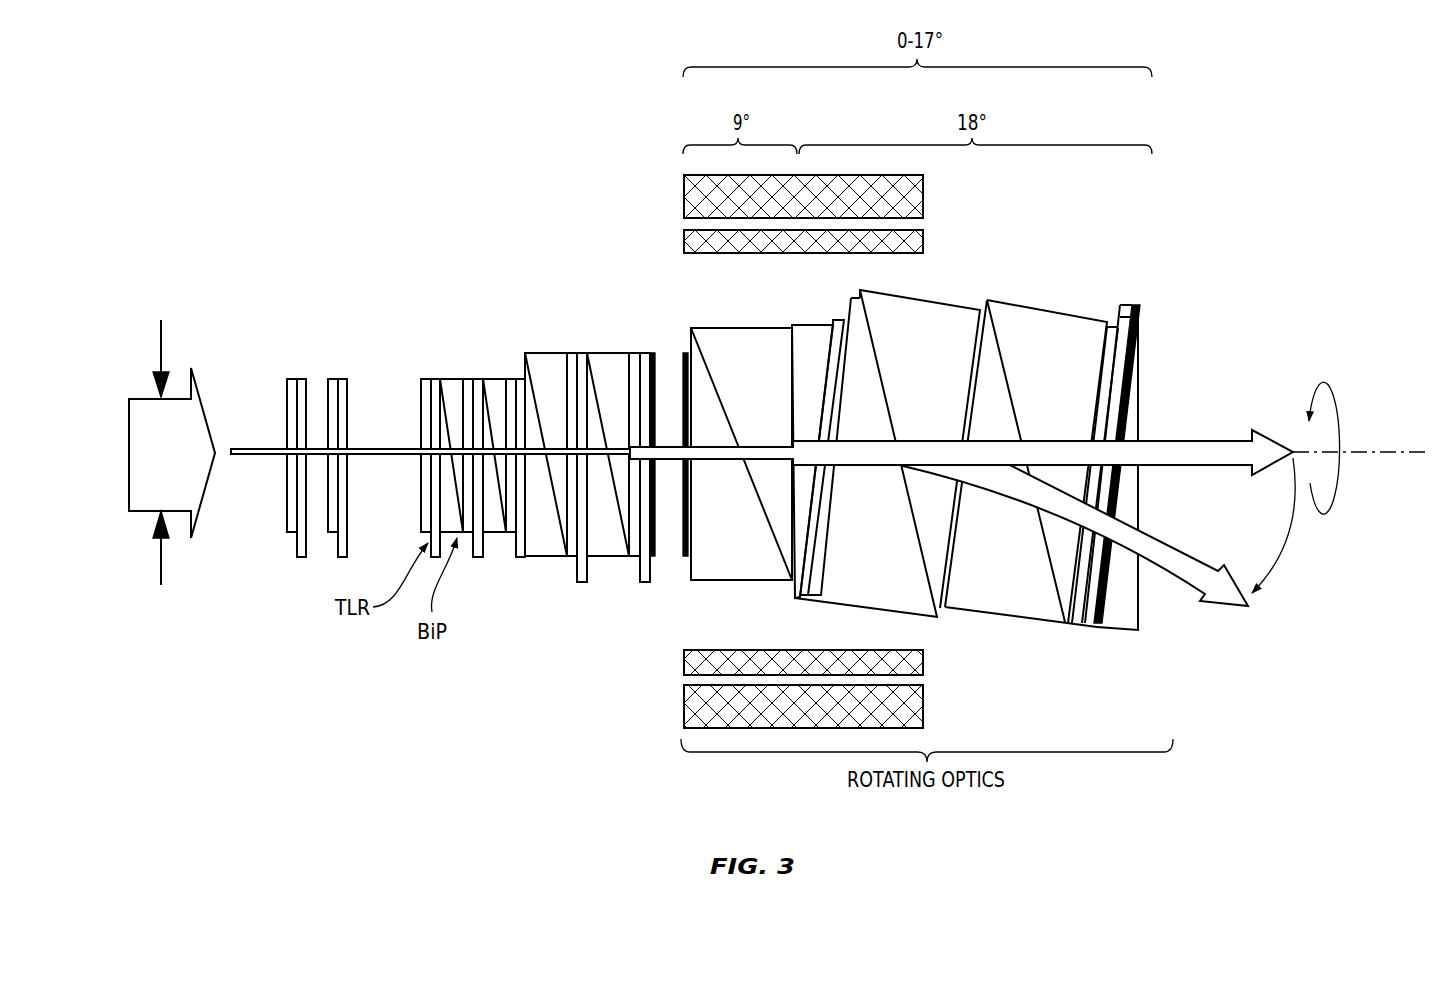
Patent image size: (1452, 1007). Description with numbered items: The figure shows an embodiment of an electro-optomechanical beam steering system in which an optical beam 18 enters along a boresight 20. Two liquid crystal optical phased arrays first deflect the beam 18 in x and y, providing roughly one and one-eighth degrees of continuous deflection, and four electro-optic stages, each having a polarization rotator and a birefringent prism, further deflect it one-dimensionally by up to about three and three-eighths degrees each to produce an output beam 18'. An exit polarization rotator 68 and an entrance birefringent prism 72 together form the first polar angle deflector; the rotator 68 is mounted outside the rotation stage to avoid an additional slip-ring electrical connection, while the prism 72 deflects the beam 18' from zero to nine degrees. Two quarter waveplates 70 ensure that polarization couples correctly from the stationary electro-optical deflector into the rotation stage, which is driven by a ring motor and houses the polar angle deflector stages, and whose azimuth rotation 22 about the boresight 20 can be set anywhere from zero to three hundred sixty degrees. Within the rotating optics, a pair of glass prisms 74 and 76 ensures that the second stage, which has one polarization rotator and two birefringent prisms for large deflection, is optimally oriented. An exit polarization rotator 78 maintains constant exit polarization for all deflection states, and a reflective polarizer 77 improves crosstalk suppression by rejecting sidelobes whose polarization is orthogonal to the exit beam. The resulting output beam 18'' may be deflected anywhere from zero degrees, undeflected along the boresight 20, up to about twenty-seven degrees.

The optical beam 18 is at (157, 452).
The output beam 18' is at (762, 476).
The output beam 18'' is at (1075, 563).
The boresight 20 is at (1392, 452).
The rotation direction 22 is at (1340, 428).
The exit TLR 68 is at (647, 350).
The quarter waveplates 70 is at (683, 557).
The birefringent prism 72 is at (790, 324).
The glass prism 74 is at (812, 332).
The glass prism 76 is at (1132, 427).
The reflective polarizer 77 is at (1146, 313).
The exit TLR 78 is at (1112, 325).